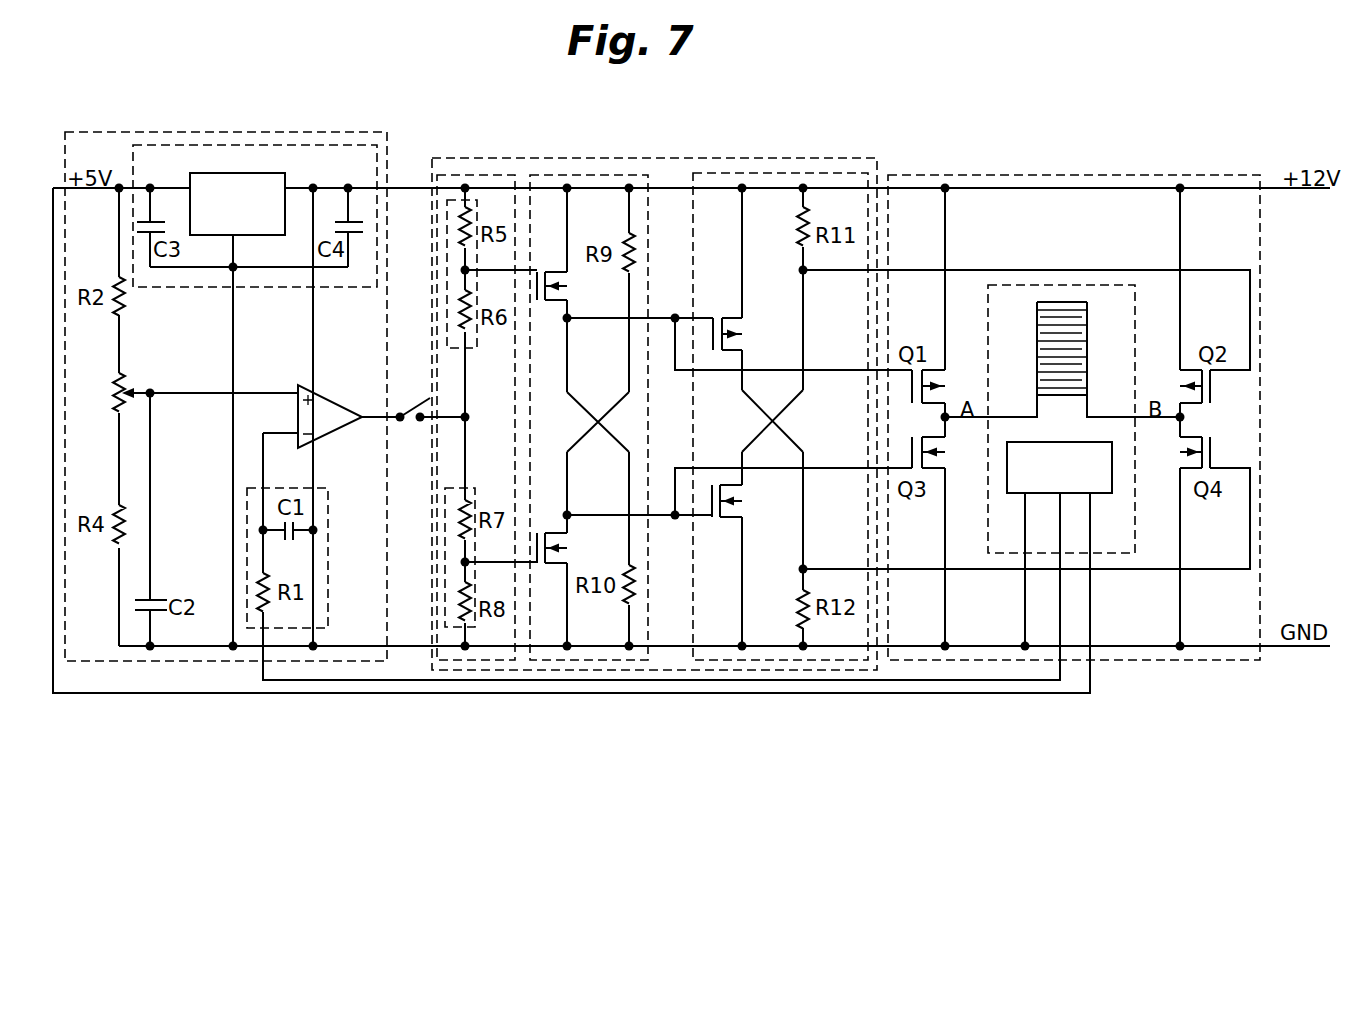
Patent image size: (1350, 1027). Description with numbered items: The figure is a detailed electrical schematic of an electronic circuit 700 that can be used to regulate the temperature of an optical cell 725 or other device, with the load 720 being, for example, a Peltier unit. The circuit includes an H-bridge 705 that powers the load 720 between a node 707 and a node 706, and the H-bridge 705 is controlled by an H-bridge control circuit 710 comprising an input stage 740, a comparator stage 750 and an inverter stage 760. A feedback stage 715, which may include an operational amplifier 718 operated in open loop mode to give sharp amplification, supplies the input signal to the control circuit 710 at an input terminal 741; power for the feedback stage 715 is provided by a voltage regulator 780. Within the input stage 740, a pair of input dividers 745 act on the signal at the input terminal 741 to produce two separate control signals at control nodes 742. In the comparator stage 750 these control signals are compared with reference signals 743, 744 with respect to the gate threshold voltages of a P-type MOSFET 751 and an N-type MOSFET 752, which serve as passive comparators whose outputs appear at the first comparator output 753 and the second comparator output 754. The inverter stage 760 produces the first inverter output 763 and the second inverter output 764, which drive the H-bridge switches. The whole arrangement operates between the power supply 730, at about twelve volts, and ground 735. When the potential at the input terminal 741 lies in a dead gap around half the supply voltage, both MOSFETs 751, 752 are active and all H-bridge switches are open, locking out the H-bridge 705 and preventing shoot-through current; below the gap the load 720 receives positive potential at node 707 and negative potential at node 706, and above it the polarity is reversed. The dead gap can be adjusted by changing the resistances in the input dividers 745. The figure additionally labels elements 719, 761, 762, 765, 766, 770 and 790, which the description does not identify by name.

The electronic circuit 700 is at (112, 100).
The H-bridge 705 is at (995, 175).
The node 706 is at (948, 420).
The node 707 is at (1185, 417).
The H-bridge control circuit 710 is at (787, 160).
The feedback stage 715 is at (155, 132).
The operational amplifier 718 is at (303, 385).
The potentiometer 719 is at (127, 388).
The load 720 is at (1087, 320).
The optical cell 725 is at (1013, 285).
The power supply 730 is at (1275, 188).
The ground 735 is at (1270, 647).
The input stage 740 is at (478, 175).
The input terminal 741 is at (430, 447).
The control node 742 is at (467, 270).
The reference signal 743 is at (569, 220).
The reference signal 744 is at (568, 618).
The input divider 745 is at (452, 200).
The comparator stage 750 is at (628, 175).
The P-type MOSFET 751 is at (563, 288).
The N-type MOSFET 752 is at (564, 548).
The first comparator output 753 is at (622, 322).
The second comparator output 754 is at (568, 513).
The inverter stage 760 is at (853, 173).
The transistor 761 is at (743, 337).
The transistor 762 is at (733, 497).
The first inverter output 763 is at (805, 568).
The second inverter output 764 is at (805, 273).
The voltage regulator 765 is at (1051, 493).
The regulator output line 766 is at (735, 682).
The switch 770 is at (430, 398).
The voltage regulator 780 is at (268, 145).
The feedback network 790 is at (285, 630).